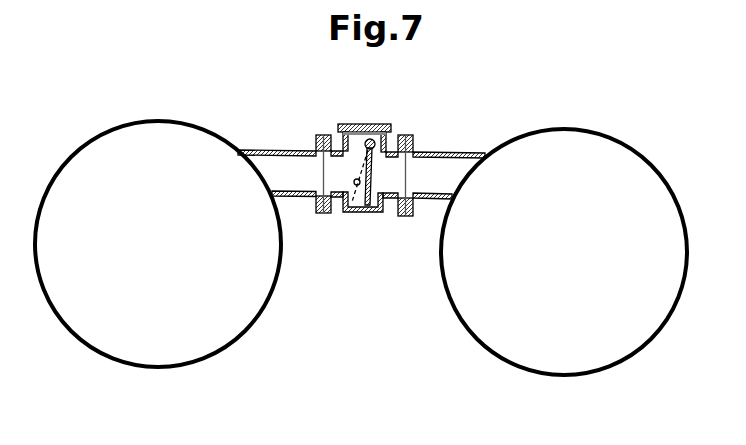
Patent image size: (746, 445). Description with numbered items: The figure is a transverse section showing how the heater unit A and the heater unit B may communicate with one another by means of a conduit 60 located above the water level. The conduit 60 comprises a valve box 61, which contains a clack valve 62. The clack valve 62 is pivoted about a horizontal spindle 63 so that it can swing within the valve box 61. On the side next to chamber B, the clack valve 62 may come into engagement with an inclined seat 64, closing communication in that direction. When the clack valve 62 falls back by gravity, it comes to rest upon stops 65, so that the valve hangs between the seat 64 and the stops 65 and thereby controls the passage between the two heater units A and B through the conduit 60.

The heater unit A is at (580, 126).
The heater unit B is at (172, 117).
The conduit 60 is at (276, 149).
The valve box 61 is at (354, 136).
The clack valve 62 is at (377, 168).
The horizontal spindle 63 is at (373, 139).
The inclined seat 64 is at (354, 181).
The stops 65 is at (383, 211).